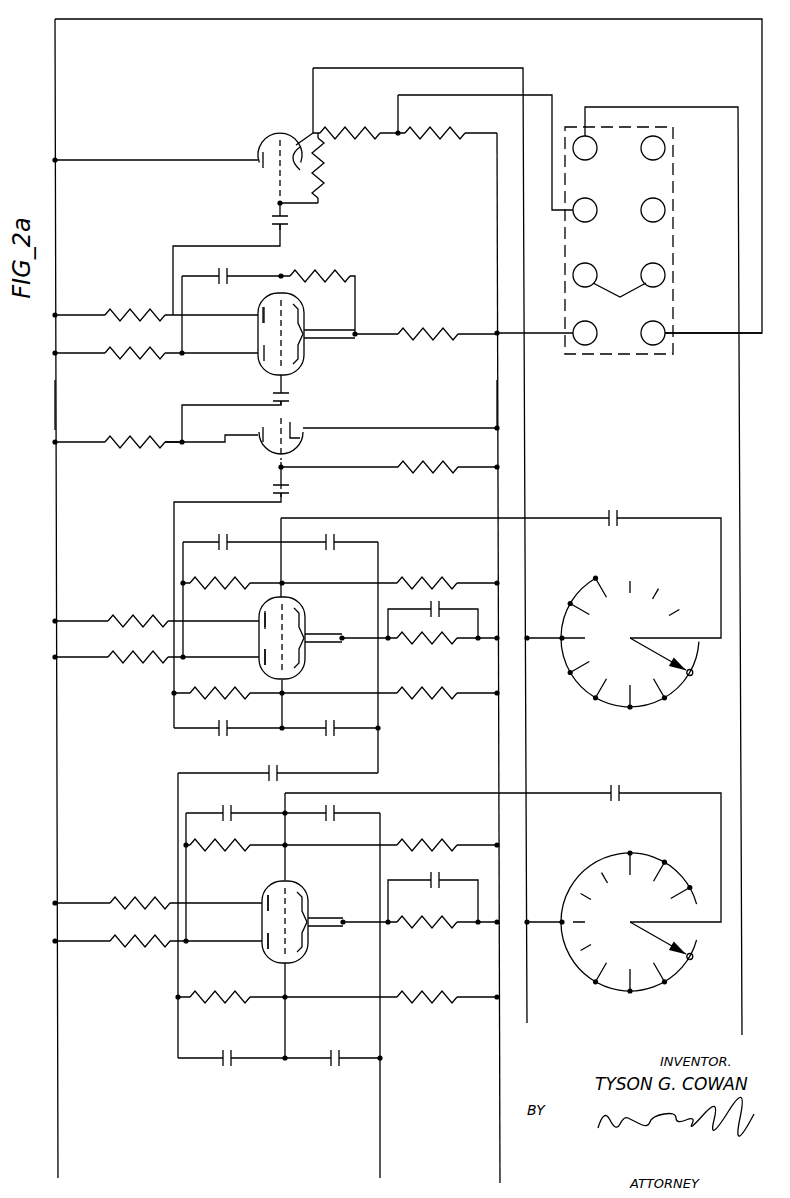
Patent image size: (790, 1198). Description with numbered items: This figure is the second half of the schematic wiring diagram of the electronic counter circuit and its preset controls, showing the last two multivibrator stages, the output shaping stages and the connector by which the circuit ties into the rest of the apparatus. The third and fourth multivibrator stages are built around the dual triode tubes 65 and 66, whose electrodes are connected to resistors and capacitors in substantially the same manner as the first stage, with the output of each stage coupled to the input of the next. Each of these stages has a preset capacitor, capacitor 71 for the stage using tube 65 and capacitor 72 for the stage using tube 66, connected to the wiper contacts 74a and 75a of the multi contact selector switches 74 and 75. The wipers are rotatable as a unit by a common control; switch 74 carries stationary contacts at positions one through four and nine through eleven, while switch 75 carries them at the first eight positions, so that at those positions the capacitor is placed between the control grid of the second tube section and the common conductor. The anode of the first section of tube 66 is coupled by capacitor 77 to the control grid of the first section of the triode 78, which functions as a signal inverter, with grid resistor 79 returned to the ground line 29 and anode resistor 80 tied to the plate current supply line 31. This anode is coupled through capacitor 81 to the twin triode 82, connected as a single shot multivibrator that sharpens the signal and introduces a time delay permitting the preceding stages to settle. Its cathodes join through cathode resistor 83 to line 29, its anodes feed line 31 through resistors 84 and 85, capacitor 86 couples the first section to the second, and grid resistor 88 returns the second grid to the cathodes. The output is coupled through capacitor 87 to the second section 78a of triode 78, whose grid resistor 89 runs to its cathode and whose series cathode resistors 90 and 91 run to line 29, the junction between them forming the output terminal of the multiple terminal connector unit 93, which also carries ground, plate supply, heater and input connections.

The plate current supply line 31 is at (55, 415).
The ground line 29 is at (497, 408).
The second section of twin triode 78 78a is at (262, 138).
The capacitor 87 is at (272, 220).
The grid resistor 89 is at (320, 160).
The cathode resistor 90 is at (360, 140).
The cathode resistor 91 is at (445, 140).
The grid resistor 88 is at (325, 276).
The capacitor 86 is at (221, 282).
The anode resistor 85 is at (135, 310).
The anode resistor 84 is at (133, 358).
The twin triode 82 is at (303, 360).
The cathode resistor 83 is at (417, 330).
The capacitor 81 is at (273, 397).
The anode resistor 80 is at (118, 438).
The triode 78 is at (266, 450).
The capacitor 77 is at (290, 489).
The grid resistor 79 is at (410, 470).
The multiple terminal connector unit 93 is at (628, 354).
The capacitor 72 is at (609, 512).
The capacitor 71 is at (611, 788).
The multi contact selector switch 75 is at (613, 641).
The wiper contact 75a is at (652, 652).
The multi contact selector switch 74 is at (613, 925).
The wiper contact 74a is at (652, 936).
The dual triode tube 66 is at (306, 648).
The dual triode tube 65 is at (309, 952).